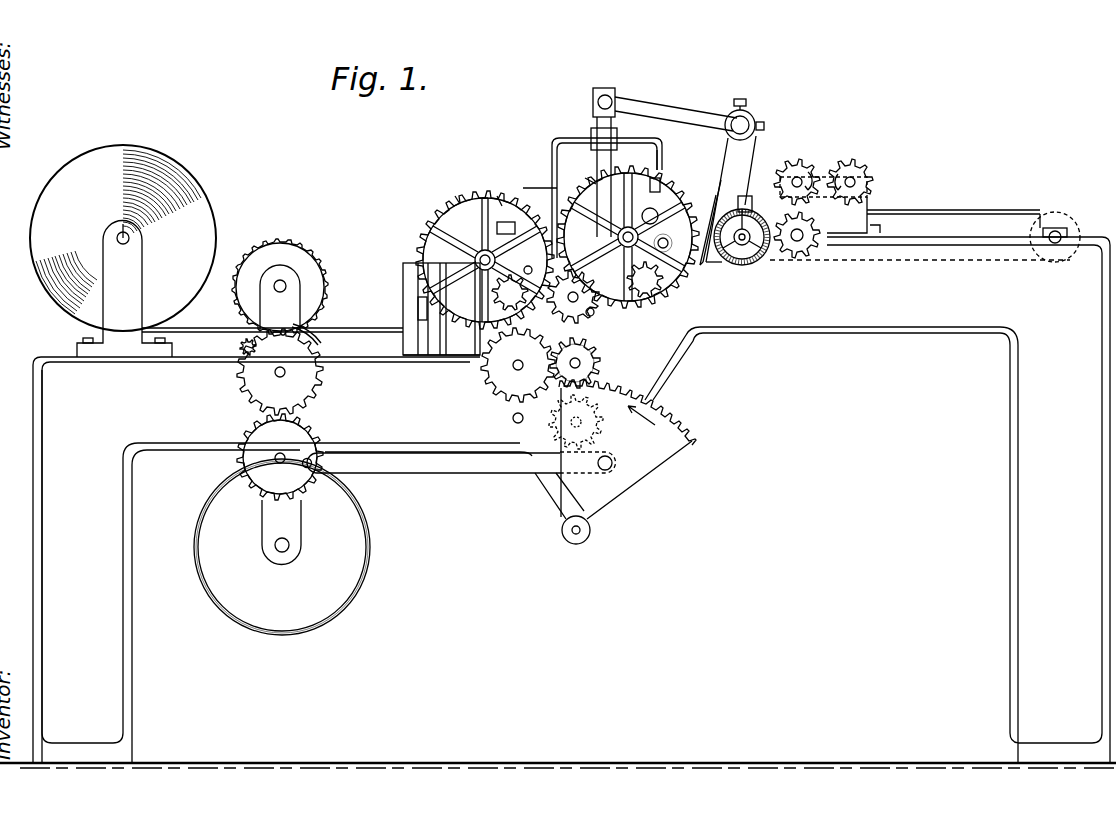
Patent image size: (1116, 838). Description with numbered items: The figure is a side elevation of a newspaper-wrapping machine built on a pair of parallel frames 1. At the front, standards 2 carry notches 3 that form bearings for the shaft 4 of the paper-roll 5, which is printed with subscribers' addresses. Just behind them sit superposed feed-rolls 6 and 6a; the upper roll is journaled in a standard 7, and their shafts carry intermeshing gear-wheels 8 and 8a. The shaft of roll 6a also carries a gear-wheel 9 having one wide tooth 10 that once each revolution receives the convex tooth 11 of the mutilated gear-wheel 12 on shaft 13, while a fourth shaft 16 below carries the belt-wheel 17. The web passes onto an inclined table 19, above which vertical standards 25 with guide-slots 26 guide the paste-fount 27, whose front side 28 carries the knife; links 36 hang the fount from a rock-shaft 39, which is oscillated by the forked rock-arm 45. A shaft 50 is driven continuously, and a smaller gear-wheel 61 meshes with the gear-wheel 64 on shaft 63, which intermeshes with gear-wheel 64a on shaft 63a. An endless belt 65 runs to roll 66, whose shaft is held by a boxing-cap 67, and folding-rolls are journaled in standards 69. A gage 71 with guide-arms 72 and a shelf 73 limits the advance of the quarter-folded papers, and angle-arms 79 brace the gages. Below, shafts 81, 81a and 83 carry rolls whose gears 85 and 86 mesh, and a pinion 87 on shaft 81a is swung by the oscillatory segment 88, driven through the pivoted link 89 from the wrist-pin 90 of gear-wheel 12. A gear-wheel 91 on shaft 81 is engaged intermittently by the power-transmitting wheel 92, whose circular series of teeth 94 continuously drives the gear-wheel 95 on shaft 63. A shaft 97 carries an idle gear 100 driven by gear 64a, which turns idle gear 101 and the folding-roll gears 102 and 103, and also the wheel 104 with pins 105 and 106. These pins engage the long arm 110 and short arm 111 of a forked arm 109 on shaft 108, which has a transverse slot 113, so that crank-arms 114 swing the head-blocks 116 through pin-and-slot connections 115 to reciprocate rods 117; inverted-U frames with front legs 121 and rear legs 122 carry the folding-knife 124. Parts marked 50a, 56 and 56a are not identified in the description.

The parallel frames 1 is at (762, 360).
The standards 2 is at (124, 289).
The notches 3 is at (135, 228).
The shaft 4 is at (131, 239).
The paper-roll 5 is at (203, 204).
The feed-roll 6 is at (280, 287).
The standard 7 is at (280, 297).
The gear-wheel 8 is at (318, 270).
The feed-roll 6a is at (240, 348).
The gear-wheel 8a is at (312, 338).
The gear-wheel 9 is at (280, 372).
The tooth 10 is at (280, 358).
The tooth 11 is at (270, 494).
The mutilated gear-wheel 12 is at (280, 457).
The shaft 13 is at (274, 463).
The fourth shaft 16 is at (281, 532).
The belt-wheel 17 is at (282, 547).
The inclined plane or table 19 is at (272, 339).
The vertical standards 25 is at (403, 266).
The vertical guide-slots 26 is at (485, 260).
The paste-fount 27 is at (448, 295).
The front side of paste-fount 28 is at (418, 299).
The links 36 is at (433, 356).
The rock-shaft 39 is at (404, 457).
The forked rock-arm 45 is at (350, 481).
The shaft 50 is at (510, 294).
The stud 50a is at (526, 266).
The gear 56 is at (573, 297).
The stud 56a is at (590, 314).
The gear-wheel 61 is at (645, 279).
The shaft 63 is at (617, 236).
The shaft 63a is at (668, 247).
The gear-wheel 64 is at (648, 215).
The gear-wheel 64a is at (666, 240).
The endless belt or apron 65 is at (903, 206).
The roll 66 is at (1057, 218).
The boxing-cap 67 is at (1062, 237).
The standards 69 is at (830, 205).
The gage 71 is at (500, 196).
The longitudinal guide-arms 72 is at (534, 188).
The shelf 73 is at (505, 227).
The angle-arms 79 is at (485, 192).
The shaft 81 is at (517, 370).
The shaft 81a is at (581, 363).
The shaft 83 is at (512, 419).
The gear-wheel 85 is at (553, 426).
The gear 86 is at (600, 373).
The gear-pinion 87 is at (592, 353).
The oscillatory segment 88 is at (627, 462).
The pivoted link 89 is at (470, 462).
The wrist-pin 90 is at (312, 465).
The gear-wheel 91 is at (518, 365).
The power-transmitting wheel 92 is at (478, 221).
The circular series of teeth 94 is at (456, 196).
The gear-wheel 95 is at (586, 178).
The shaft 97 is at (757, 258).
The gear-wheel 100 is at (737, 272).
The idle gear 101 is at (801, 259).
The gear-wheel 102 is at (801, 160).
The gear 103 is at (859, 160).
The wheel 104 is at (741, 265).
The pin 105 is at (744, 196).
The second pin 106 is at (720, 207).
The shaft 108 is at (754, 119).
The forked arm 109 is at (731, 199).
The long arm 110 is at (716, 268).
The short arm 111 is at (733, 250).
The transverse slot 113 is at (714, 180).
The crank-arms 114 is at (676, 111).
The pin-and-slot connection 115 is at (598, 98).
The head-blocks 116 is at (609, 92).
The vertically-reciprocatory rods 117 is at (613, 165).
The front legs 121 is at (552, 147).
The rear legs 122 is at (662, 152).
The folding-knife 124 is at (643, 188).